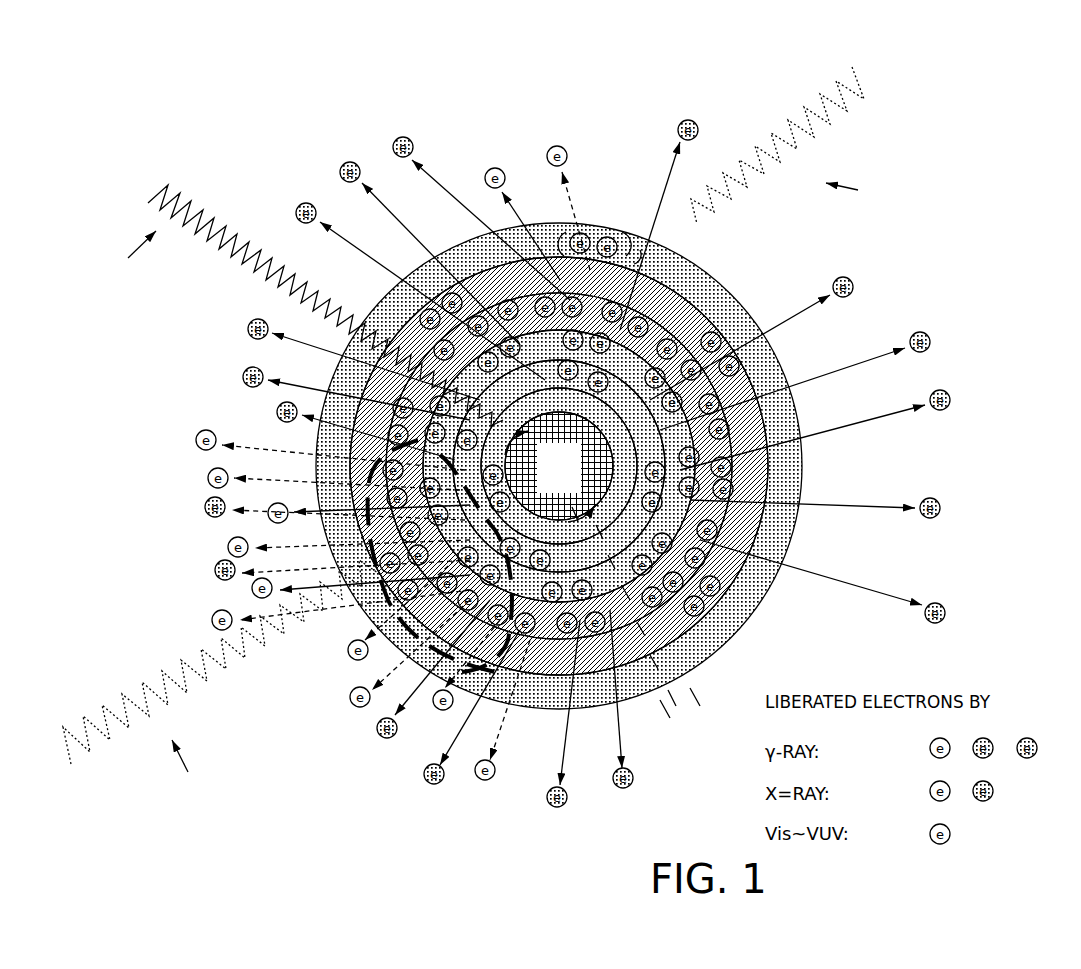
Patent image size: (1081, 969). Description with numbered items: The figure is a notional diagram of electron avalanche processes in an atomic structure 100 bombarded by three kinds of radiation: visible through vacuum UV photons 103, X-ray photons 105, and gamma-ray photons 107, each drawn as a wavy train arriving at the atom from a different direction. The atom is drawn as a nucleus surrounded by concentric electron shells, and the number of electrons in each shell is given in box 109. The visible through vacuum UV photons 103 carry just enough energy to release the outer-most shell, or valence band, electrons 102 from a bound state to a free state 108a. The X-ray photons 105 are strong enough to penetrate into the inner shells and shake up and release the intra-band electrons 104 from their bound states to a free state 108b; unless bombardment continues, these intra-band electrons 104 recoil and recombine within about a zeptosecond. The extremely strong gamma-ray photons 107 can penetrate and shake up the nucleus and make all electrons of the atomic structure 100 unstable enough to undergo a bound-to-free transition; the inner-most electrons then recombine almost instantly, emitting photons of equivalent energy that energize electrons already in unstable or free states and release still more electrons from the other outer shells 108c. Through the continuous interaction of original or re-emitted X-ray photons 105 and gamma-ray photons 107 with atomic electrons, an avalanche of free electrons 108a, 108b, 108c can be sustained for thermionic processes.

The atomic structure 100 is at (172, 95).
The outer-most shell electrons 102 is at (605, 225).
The visible through vacuum UV photons 103 is at (796, 108).
The intra-band electrons 104 is at (478, 665).
The X-ray photons 105 is at (100, 746).
The gamma-ray photons 107 is at (226, 196).
The free state electrons released by visible/UV photons 108a is at (547, 150).
The free state electrons released by X-ray photons 108b is at (207, 468).
The electrons released from outer shells by recombination photons 108c is at (678, 128).
The box giving number of electrons in each shell 109 is at (684, 710).